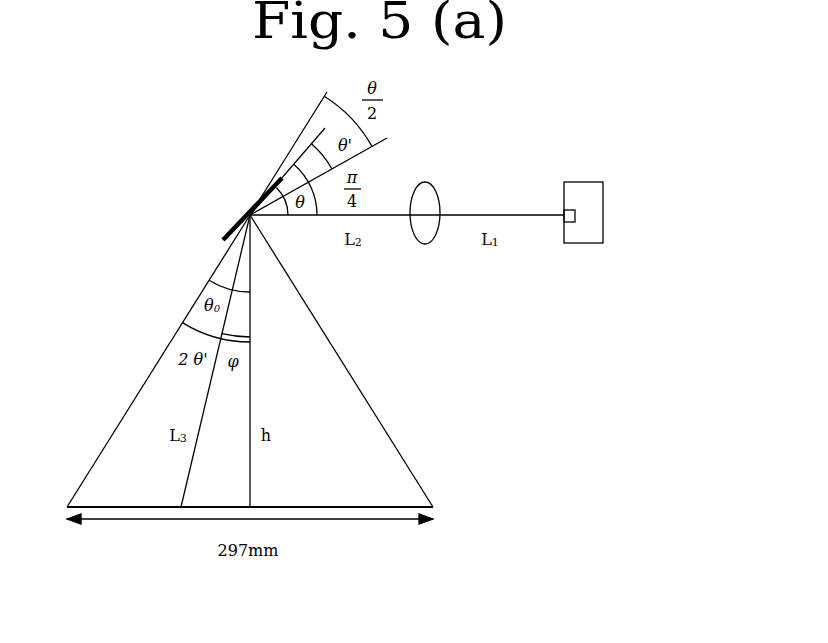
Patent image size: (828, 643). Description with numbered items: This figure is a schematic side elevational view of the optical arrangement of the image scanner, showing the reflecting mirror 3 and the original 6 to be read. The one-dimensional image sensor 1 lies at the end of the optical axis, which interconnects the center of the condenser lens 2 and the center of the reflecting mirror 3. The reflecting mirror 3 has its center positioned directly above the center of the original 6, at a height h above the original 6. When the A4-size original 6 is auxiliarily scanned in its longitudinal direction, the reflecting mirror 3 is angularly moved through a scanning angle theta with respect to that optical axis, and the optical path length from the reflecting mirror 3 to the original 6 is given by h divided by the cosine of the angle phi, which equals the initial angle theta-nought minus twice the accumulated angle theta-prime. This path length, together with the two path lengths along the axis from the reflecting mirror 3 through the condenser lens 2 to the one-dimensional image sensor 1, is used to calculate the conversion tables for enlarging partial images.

The one-dimensional image sensor 1 is at (603, 195).
The condenser lens 2 is at (436, 194).
The reflecting mirror 3 is at (236, 226).
The original 6 is at (426, 503).